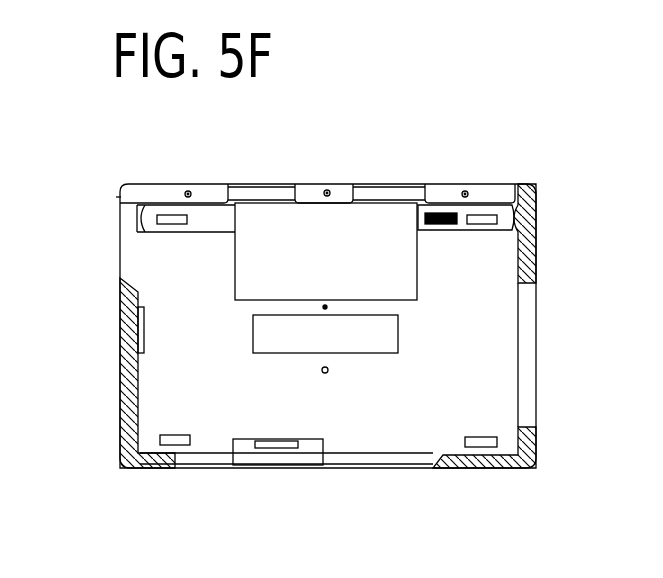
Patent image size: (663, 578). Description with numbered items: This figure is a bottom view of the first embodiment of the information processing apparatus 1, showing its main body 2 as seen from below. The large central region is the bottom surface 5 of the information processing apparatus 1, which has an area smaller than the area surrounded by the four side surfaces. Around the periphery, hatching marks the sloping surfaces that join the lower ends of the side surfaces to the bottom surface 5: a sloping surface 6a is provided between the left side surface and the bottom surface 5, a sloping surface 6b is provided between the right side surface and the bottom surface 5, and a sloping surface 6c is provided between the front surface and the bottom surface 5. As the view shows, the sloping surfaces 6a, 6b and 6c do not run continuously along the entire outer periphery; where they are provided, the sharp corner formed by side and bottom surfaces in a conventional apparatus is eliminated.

The information processing apparatus 1 is at (483, 90).
The main body 2 is at (382, 184).
The bottom surface 5 is at (385, 415).
The sloping surface 6a is at (532, 187).
The sloping surface 6b is at (122, 427).
The sloping surface 6c is at (458, 469).